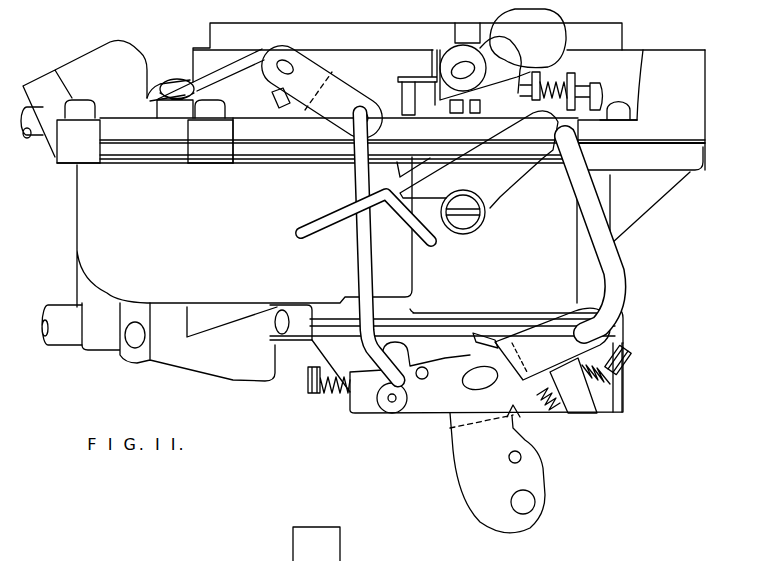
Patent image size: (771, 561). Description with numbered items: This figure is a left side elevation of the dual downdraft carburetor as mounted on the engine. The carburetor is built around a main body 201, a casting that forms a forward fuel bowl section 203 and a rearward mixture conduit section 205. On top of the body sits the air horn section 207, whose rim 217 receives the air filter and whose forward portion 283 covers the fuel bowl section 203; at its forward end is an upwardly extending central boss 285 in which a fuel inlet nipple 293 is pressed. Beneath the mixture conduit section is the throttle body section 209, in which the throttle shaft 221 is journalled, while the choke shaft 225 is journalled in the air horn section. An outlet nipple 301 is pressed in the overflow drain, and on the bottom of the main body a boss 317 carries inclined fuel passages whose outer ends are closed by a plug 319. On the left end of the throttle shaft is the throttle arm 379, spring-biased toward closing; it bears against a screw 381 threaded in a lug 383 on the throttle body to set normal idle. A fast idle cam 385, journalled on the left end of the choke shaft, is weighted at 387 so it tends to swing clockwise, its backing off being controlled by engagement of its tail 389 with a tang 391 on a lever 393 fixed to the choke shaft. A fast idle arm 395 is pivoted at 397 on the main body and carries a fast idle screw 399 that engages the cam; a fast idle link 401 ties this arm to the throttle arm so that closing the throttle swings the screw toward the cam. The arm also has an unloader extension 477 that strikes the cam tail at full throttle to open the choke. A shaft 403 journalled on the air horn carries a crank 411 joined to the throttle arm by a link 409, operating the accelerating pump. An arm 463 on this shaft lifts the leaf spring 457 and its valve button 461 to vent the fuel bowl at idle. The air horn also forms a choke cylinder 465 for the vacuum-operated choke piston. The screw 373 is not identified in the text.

The main body 201 is at (70, 240).
The fuel bowl section 203 is at (188, 247).
The mixture conduit section 205 is at (477, 292).
The air horn section 207 is at (200, 50).
The throttle body section 209 is at (624, 400).
The rim 217 is at (623, 35).
The throttle shaft 221 is at (474, 381).
The choke shaft 225 is at (461, 66).
The forward portion of the air horn section 283 is at (272, 133).
The central boss 285 is at (118, 32).
The fuel inlet nipple 293 is at (42, 135).
The outlet nipple 301 is at (52, 337).
The boss 317 is at (289, 341).
The plug 319 is at (276, 325).
The idle speed screw 373 is at (308, 398).
The throttle arm 379 is at (462, 447).
The screw 381 is at (554, 412).
The lug 383 is at (602, 412).
The fast idle cam 385 is at (503, 83).
The weight 387 is at (553, 22).
The tail 389 is at (400, 96).
The tang 391 is at (411, 76).
The lever 393 is at (440, 110).
The fast idle arm 395 is at (502, 185).
The pivot 397 is at (480, 233).
The fast idle screw 399 is at (597, 83).
The fast idle link 401 is at (615, 258).
The shaft 403 is at (287, 62).
The link 409 is at (360, 257).
The crank 411 is at (340, 121).
The leaf spring 457 is at (152, 92).
The valve button 461 is at (173, 101).
The arm 463 is at (232, 70).
The choke cylinder 465 is at (672, 55).
The unloader extension 477 is at (336, 216).